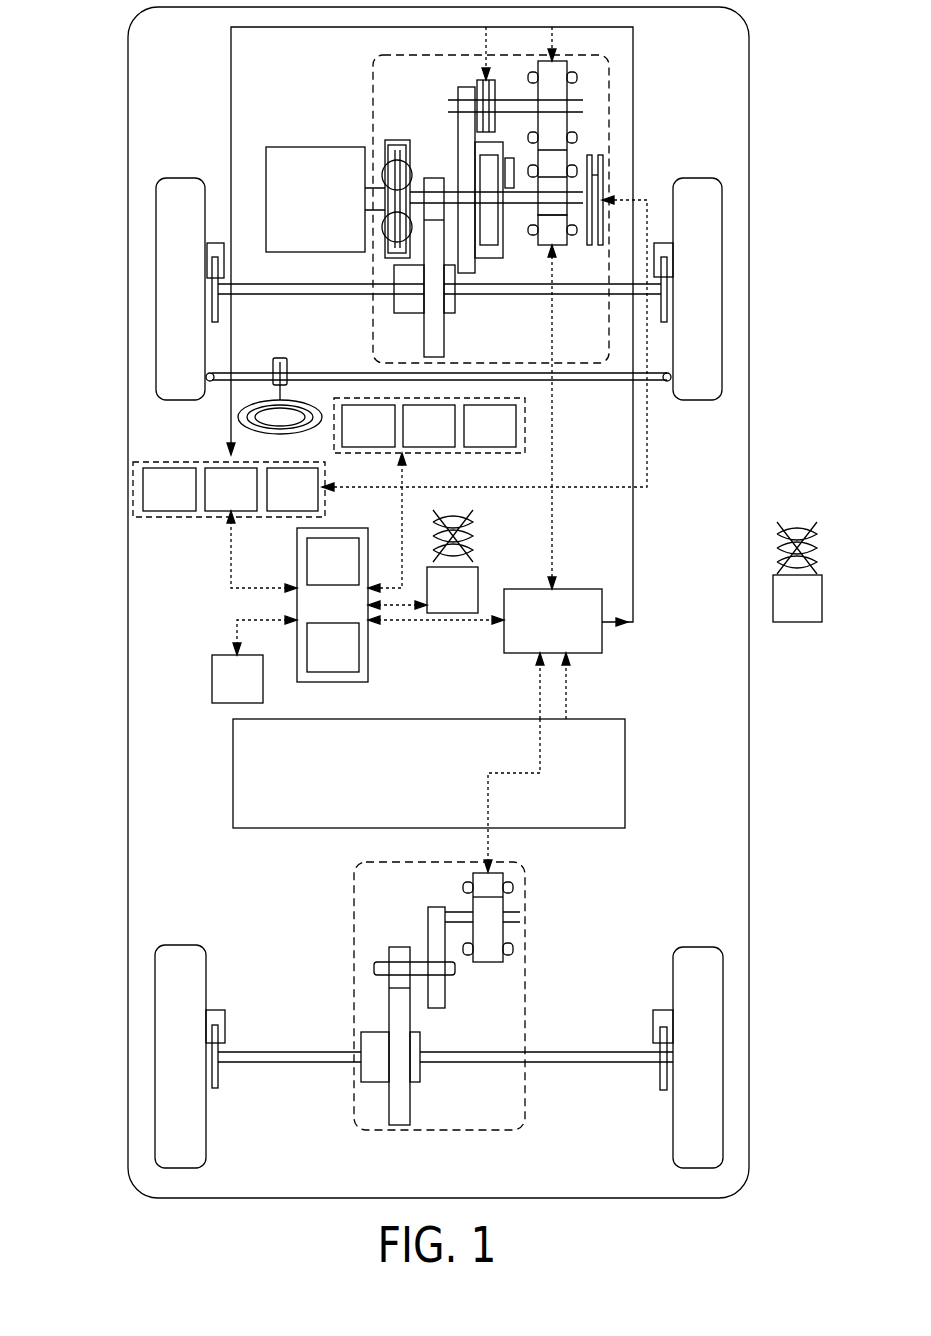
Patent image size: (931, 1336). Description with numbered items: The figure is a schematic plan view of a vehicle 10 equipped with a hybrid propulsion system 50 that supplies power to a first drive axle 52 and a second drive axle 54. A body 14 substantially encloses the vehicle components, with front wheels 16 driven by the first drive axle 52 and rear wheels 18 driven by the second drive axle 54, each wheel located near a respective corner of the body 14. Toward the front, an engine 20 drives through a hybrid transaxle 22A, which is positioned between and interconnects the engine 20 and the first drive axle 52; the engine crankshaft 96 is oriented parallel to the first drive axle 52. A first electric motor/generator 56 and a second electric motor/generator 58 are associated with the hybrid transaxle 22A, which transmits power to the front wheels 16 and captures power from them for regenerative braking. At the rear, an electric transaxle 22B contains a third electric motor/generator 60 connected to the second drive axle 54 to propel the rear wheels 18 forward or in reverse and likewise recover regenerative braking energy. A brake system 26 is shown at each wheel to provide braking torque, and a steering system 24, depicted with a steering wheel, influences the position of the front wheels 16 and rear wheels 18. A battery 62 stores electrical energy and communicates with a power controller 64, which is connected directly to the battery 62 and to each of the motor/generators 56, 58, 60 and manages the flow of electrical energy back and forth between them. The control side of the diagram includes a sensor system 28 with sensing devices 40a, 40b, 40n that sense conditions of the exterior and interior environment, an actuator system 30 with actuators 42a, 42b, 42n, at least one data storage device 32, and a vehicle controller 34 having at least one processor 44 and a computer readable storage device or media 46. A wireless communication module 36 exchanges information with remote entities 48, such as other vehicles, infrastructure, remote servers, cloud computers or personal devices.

The vehicle 10 is at (396, 602).
The body 14 is at (127, 805).
The front wheels 16 is at (180, 178).
The rear wheels 18 is at (180, 945).
The engine 20 is at (302, 212).
The hybrid transaxle 22A is at (481, 198).
The electric transaxle 22B is at (415, 996).
The steering system 24 is at (268, 342).
The brake system 26 is at (218, 248).
The sensor system 28 is at (432, 441).
The actuator system 30 is at (229, 468).
The data storage device 32 is at (225, 692).
The vehicle controller 34 is at (332, 605).
The wireless communication module 36 is at (440, 603).
The sensing device 40a is at (350, 438).
The sensing device 40b is at (411, 438).
The sensing device 40n is at (472, 438).
The actuator 42a is at (151, 501).
The actuator 42b is at (213, 501).
The actuator 42n is at (274, 501).
The processor 44 is at (320, 574).
The computer readable storage device or media 46 is at (320, 659).
The remote entities 48 is at (784, 611).
The hybrid propulsion system 50 is at (258, 605).
The first drive axle 52 is at (352, 289).
The second drive axle 54 is at (312, 1057).
The first electric motor/generator 56 is at (555, 215).
The second electric motor/generator 58 is at (553, 100).
The third electric motor/generator 60 is at (490, 910).
The battery 62 is at (349, 786).
The power controller 64 is at (540, 634).
The engine crankshaft 96 is at (385, 178).